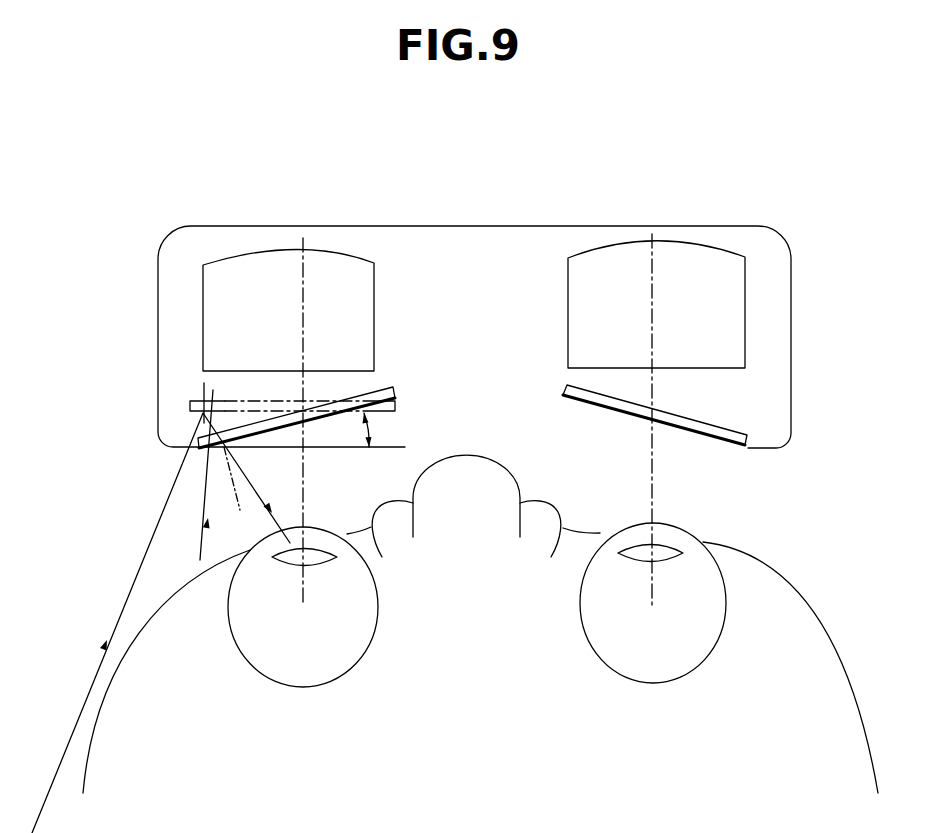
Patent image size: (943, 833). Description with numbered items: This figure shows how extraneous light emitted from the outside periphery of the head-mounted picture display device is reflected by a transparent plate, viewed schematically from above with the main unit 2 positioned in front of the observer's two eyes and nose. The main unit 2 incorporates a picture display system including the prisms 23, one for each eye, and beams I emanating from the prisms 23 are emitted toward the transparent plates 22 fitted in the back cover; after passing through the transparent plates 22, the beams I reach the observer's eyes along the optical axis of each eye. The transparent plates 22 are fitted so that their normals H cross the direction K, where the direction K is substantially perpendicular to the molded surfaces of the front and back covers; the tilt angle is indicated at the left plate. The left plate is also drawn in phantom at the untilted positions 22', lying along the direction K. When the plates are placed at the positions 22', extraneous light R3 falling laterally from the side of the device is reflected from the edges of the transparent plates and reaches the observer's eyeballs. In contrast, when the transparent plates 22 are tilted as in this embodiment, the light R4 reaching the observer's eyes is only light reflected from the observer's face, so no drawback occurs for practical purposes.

The main unit 2 is at (431, 222).
The prisms 23 is at (245, 272).
The transparent plates 22 is at (489, 455).
The positions of the transparent plates 22' is at (234, 420).
The direction K is at (203, 392).
The normals H is at (227, 478).
The beams I is at (307, 512).
The extraneous light R3 is at (97, 673).
The light R4 is at (208, 505).